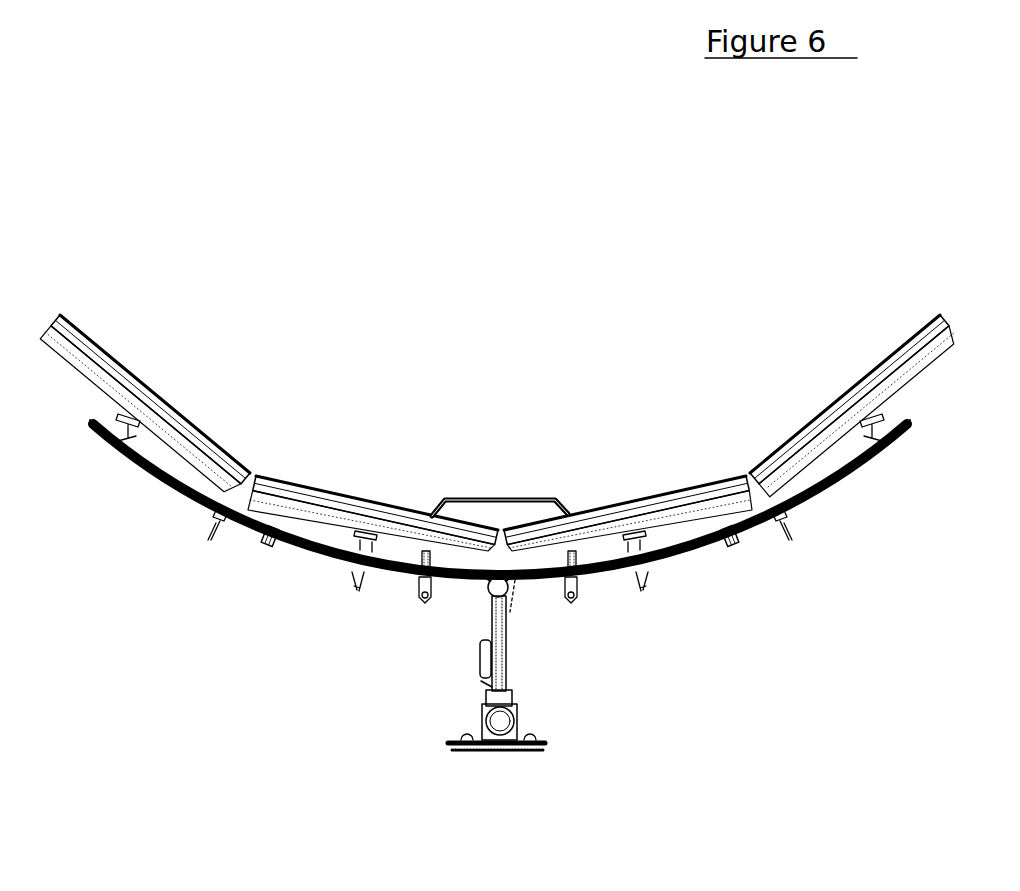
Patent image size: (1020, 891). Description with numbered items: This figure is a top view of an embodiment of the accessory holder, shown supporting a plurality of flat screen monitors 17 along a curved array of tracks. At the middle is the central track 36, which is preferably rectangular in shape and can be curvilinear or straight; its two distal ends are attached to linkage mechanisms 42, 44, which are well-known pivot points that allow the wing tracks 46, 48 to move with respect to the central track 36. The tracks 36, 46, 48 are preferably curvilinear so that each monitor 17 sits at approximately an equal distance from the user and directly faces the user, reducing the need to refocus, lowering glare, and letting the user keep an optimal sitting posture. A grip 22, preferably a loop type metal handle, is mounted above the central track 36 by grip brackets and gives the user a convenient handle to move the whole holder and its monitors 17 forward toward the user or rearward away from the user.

The flat screen monitors 17 is at (220, 448).
The grip 22 is at (508, 500).
The central track 36 is at (455, 580).
The linkage mechanism 42 is at (271, 536).
The linkage mechanism 44 is at (724, 540).
The wing track 46 is at (185, 492).
The wing track 48 is at (810, 493).